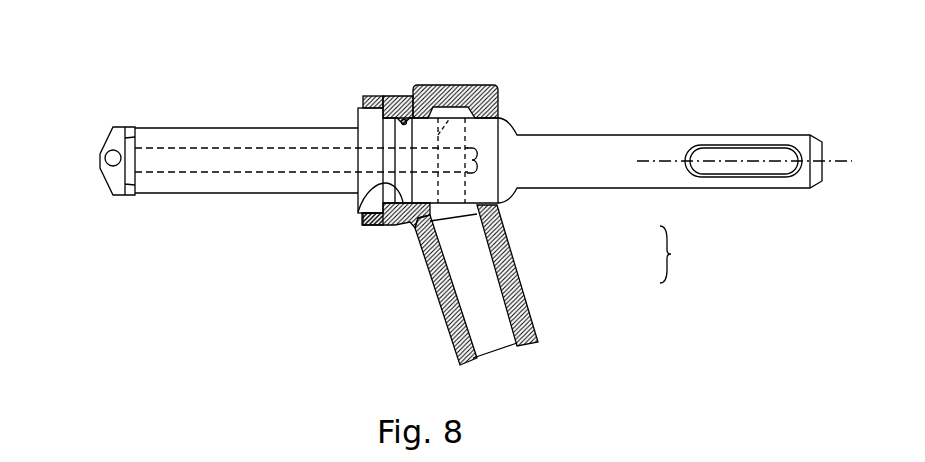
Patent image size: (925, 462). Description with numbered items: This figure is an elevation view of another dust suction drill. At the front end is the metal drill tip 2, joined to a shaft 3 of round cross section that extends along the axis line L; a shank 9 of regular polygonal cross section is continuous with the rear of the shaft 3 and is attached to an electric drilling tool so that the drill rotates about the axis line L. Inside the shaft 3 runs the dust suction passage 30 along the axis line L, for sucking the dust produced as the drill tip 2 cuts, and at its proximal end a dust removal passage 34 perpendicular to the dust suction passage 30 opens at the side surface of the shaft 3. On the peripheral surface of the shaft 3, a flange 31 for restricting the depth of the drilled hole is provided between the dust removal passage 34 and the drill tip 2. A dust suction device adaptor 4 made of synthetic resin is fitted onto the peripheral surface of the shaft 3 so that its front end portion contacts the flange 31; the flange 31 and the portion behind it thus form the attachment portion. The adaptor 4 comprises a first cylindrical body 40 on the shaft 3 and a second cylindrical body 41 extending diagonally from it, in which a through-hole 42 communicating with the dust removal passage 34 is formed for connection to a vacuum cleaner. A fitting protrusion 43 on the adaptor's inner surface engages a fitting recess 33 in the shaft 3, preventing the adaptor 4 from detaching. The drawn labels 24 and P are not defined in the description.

The drill tip 2 is at (125, 127).
The hole 24 is at (106, 166).
The point P is at (102, 163).
The shaft 3 is at (288, 137).
The dust suction passage 30 is at (222, 172).
The flange 31 is at (365, 122).
The fitting recess 33 is at (403, 120).
The dust removal passage 34 is at (444, 92).
The shank 9 is at (607, 147).
The axis line L is at (832, 150).
The fitting protrusion 43 is at (358, 207).
The first cylindrical body 40 is at (495, 108).
The second cylindrical body 41 is at (537, 322).
The dust suction device adaptor 4 is at (675, 254).
The through-hole 42 is at (470, 337).